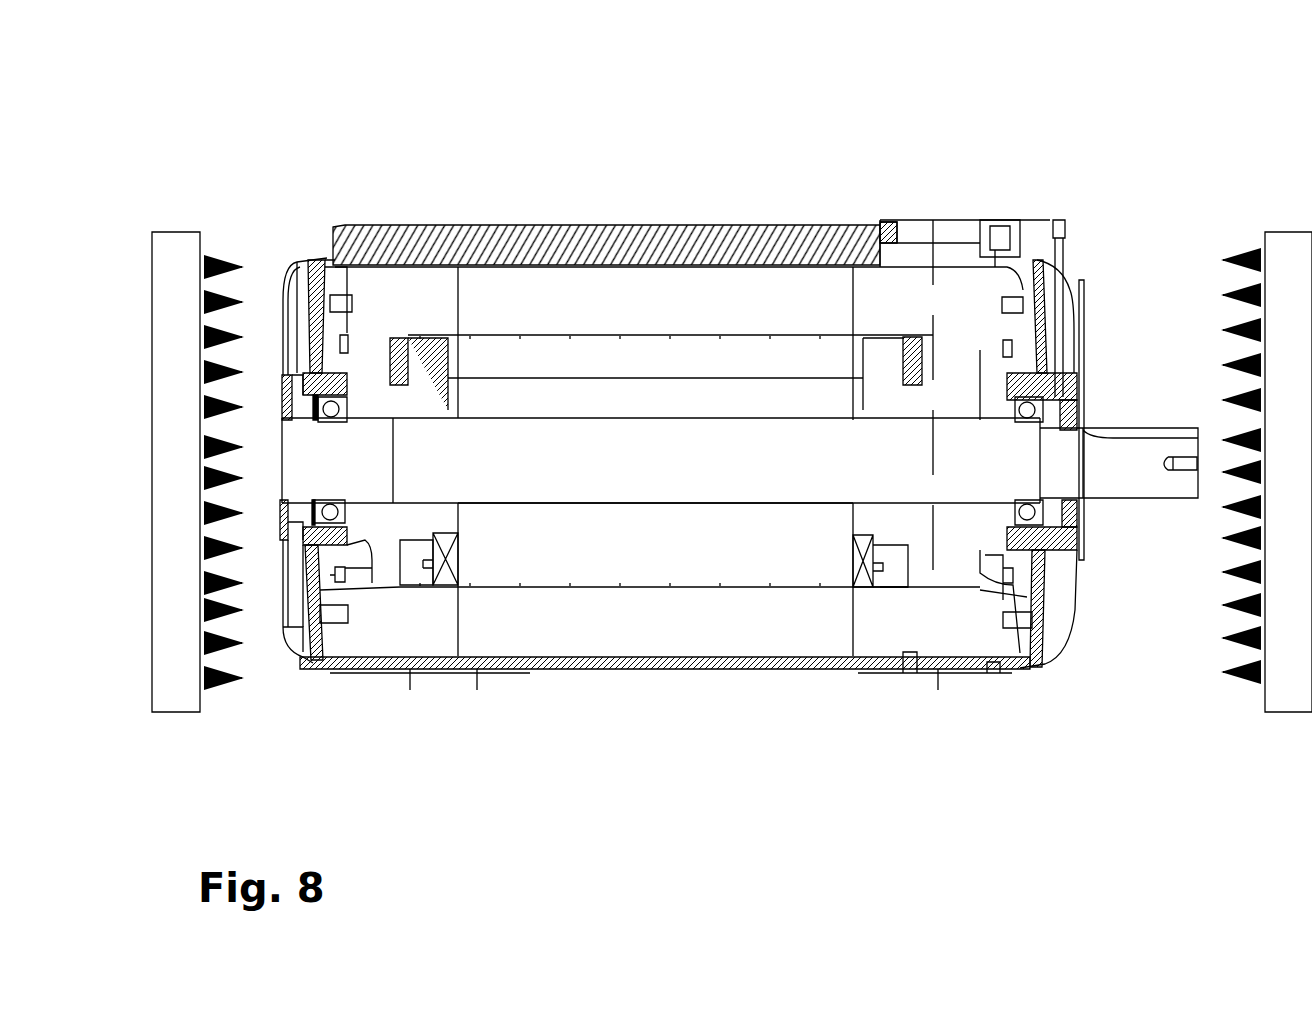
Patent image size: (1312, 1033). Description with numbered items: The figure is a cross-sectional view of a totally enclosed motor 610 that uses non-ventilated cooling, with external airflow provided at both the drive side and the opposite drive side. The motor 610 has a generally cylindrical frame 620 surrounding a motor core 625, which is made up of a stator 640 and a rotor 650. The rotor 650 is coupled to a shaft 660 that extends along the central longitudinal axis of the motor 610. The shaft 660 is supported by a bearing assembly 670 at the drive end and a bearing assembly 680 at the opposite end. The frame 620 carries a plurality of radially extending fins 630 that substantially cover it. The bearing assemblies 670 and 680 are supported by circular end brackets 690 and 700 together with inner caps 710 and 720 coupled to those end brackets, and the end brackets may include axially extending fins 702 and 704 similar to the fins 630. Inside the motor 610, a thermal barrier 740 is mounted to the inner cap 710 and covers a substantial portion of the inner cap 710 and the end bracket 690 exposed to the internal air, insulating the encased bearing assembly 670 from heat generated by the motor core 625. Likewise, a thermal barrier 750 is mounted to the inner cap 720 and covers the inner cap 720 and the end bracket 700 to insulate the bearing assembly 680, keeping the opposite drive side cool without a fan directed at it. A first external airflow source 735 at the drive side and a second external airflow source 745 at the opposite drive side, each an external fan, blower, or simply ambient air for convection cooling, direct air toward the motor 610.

The totally enclosed motor 610 is at (333, 105).
The frame 620 is at (833, 672).
The motor core 625 is at (745, 300).
The fins 630 is at (598, 233).
The stator 640 is at (730, 613).
The rotor 650 is at (642, 553).
The shaft 660 is at (515, 473).
The bearing assembly 670 is at (1060, 298).
The bearing assembly 680 is at (332, 400).
The end bracket 690 is at (1080, 357).
The end bracket 700 is at (333, 643).
The axially extending fins 702 is at (1062, 650).
The axially extending fins 704 is at (295, 650).
The inner cap 710 is at (1034, 262).
The inner cap 720 is at (355, 403).
The first external airflow source 735 is at (1280, 232).
The thermal barrier 740 is at (987, 583).
The second external airflow source 745 is at (180, 232).
The thermal barrier 750 is at (373, 560).